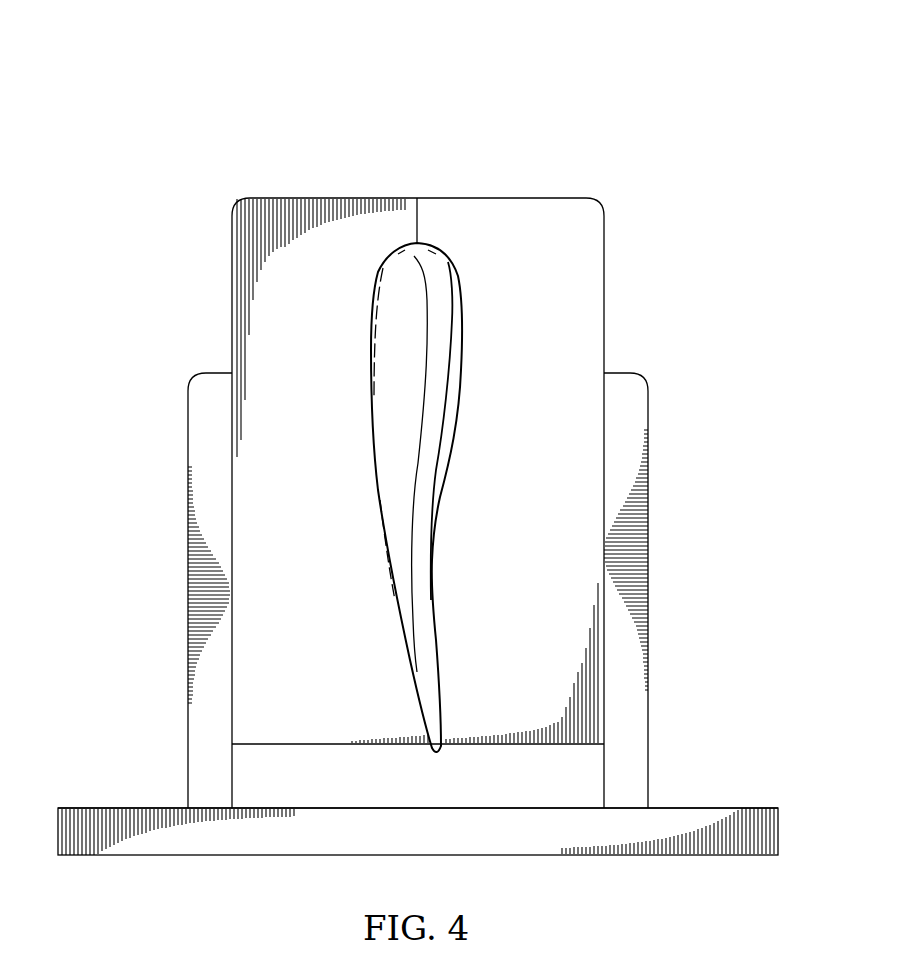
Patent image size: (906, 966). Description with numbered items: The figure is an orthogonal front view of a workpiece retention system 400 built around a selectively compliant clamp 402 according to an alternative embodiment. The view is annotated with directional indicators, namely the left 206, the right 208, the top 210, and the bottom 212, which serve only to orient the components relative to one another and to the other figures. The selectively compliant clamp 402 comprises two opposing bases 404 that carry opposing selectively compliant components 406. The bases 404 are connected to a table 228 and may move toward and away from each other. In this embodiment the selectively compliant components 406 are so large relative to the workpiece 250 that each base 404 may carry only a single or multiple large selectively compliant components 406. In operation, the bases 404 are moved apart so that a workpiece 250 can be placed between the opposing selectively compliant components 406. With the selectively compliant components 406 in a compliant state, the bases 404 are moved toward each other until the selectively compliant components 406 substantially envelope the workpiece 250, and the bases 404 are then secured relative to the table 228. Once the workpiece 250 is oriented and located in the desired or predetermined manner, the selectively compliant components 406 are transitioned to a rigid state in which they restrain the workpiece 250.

The workpiece retention system 400 is at (333, 88).
The selectively compliant clamp 402 is at (662, 330).
The top 210 is at (457, 178).
The selectively compliant components 406 is at (232, 247).
The bases 404 is at (188, 412).
The left 206 is at (152, 551).
The right 208 is at (684, 550).
The workpiece 250 is at (375, 438).
The bottom 212 is at (574, 872).
The table 228 is at (705, 808).